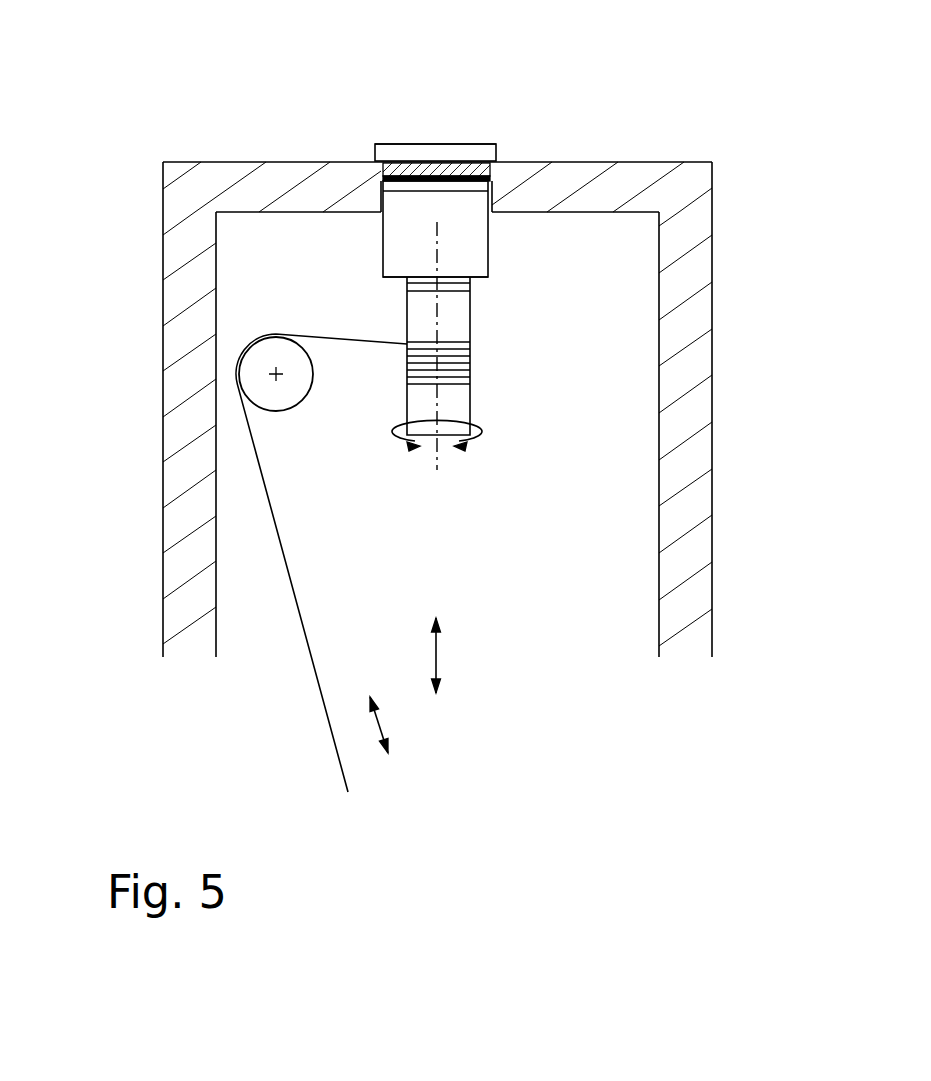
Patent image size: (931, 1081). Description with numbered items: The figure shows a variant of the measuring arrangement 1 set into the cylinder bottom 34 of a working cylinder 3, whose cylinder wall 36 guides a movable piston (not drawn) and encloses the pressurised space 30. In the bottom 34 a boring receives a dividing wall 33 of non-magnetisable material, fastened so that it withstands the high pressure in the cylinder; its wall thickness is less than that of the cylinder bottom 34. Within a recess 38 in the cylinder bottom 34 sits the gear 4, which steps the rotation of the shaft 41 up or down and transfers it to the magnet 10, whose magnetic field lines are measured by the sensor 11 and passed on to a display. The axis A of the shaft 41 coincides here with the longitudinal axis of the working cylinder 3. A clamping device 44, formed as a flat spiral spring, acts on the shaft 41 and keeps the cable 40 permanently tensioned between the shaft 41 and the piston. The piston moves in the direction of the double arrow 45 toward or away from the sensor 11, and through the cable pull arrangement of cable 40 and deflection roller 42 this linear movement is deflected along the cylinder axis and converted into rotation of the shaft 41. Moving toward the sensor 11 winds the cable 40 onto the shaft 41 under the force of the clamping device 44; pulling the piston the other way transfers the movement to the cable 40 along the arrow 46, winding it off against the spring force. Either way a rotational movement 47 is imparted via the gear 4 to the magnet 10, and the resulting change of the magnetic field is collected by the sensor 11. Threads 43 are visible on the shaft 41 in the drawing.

The measuring arrangement 1 is at (551, 339).
The working cylinder 3 is at (374, 346).
The gear 4 is at (478, 225).
The magnet 10 is at (492, 144).
The sensor 11 is at (420, 148).
The pressurised space 30 is at (370, 494).
The dividing wall 33 is at (385, 165).
The cylinder bottom 34 is at (272, 183).
The cylinder wall 36 is at (178, 627).
The recess 38 is at (493, 175).
The cable 40 is at (285, 557).
The shaft 41 is at (455, 313).
The deflection roller 42 is at (248, 382).
The thread 43 is at (463, 360).
The clamping device 44 is at (468, 270).
The double arrow 45 is at (436, 655).
The arrow 46 is at (378, 733).
The rotational movement 47 is at (483, 435).
The axis A is at (437, 470).